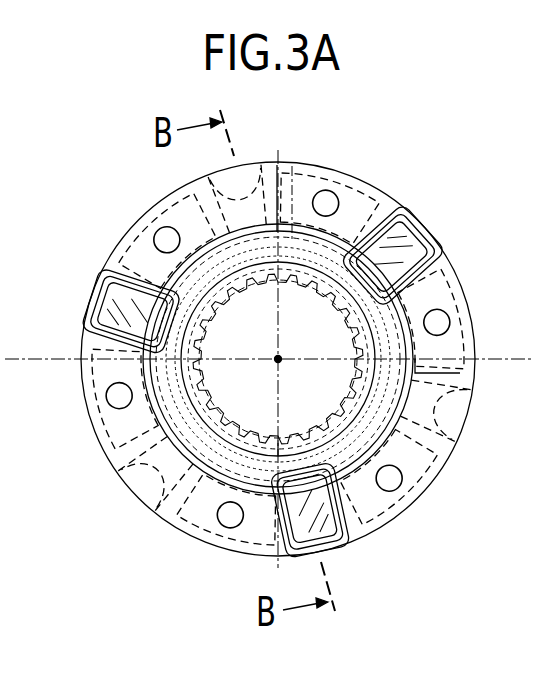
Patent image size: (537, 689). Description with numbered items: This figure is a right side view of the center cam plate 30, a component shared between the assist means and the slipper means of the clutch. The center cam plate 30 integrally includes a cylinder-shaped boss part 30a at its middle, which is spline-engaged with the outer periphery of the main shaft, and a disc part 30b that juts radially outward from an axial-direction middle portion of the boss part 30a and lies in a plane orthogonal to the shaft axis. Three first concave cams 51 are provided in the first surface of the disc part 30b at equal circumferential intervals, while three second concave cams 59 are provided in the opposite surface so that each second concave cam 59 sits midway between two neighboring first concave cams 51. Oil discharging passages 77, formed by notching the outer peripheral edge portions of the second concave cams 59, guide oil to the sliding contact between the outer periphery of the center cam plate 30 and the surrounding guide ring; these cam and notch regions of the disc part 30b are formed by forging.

The center cam plate 30 is at (383, 190).
The boss part 30a is at (337, 300).
The disc part 30b is at (292, 167).
The first concave cam 51 is at (222, 212).
The second concave cam 59 is at (410, 280).
The oil discharging passage 77 is at (406, 222).